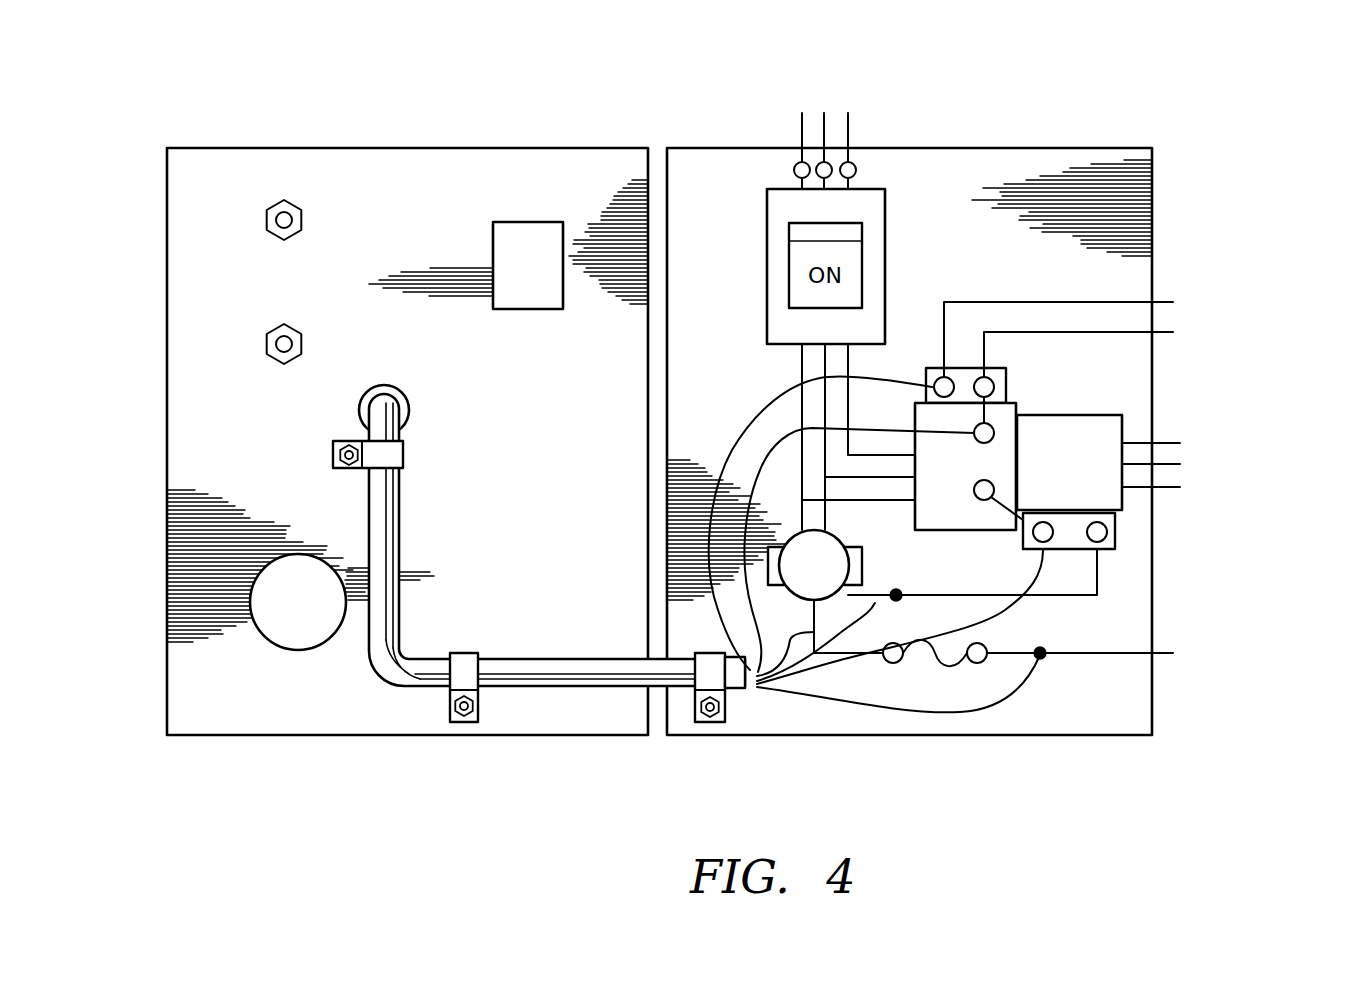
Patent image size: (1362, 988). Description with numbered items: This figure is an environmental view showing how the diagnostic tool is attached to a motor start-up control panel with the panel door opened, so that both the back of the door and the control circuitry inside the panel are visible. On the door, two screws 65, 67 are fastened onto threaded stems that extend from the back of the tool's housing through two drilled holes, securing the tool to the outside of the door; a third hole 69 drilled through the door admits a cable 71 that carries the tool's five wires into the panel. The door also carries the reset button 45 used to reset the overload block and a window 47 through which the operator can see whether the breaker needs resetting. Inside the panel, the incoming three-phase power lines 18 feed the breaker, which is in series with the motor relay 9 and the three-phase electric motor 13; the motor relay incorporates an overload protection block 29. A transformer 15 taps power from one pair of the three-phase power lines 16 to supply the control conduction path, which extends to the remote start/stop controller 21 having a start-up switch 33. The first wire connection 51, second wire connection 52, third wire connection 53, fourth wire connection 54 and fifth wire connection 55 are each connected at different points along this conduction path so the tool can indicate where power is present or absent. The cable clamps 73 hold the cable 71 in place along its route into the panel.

The motor relay 9 is at (1031, 383).
The three-phase electric motor 13 is at (1202, 510).
The transformer 15 is at (799, 578).
The three-phase power lines 16 is at (876, 501).
The three-phase power lines 18 is at (858, 100).
The remote start/stop controller 21 is at (1190, 694).
The overload protection block 29 is at (1086, 472).
The start-up switch 33 is at (1188, 350).
The reset button 45 is at (295, 652).
The window 47 is at (493, 246).
The first wire connection 51 is at (1022, 708).
The second wire connection 52 is at (785, 392).
The third wire connection 53 is at (762, 453).
The fourth wire connection 54 is at (1020, 605).
The fifth wire connection 55 is at (875, 603).
The screw 65 is at (275, 205).
The screw 67 is at (280, 330).
The third hole 69 is at (386, 392).
The cable 71 is at (402, 578).
The conduit clamp 73 is at (335, 482).